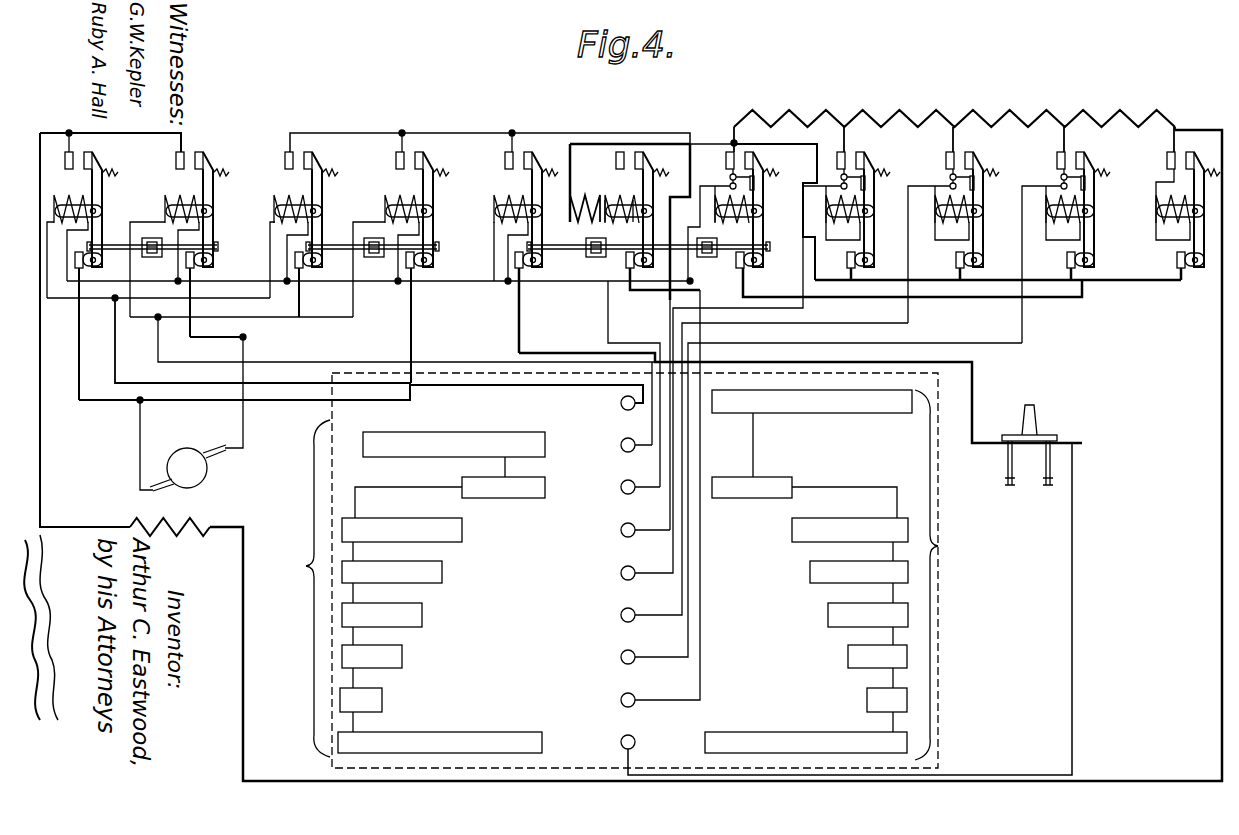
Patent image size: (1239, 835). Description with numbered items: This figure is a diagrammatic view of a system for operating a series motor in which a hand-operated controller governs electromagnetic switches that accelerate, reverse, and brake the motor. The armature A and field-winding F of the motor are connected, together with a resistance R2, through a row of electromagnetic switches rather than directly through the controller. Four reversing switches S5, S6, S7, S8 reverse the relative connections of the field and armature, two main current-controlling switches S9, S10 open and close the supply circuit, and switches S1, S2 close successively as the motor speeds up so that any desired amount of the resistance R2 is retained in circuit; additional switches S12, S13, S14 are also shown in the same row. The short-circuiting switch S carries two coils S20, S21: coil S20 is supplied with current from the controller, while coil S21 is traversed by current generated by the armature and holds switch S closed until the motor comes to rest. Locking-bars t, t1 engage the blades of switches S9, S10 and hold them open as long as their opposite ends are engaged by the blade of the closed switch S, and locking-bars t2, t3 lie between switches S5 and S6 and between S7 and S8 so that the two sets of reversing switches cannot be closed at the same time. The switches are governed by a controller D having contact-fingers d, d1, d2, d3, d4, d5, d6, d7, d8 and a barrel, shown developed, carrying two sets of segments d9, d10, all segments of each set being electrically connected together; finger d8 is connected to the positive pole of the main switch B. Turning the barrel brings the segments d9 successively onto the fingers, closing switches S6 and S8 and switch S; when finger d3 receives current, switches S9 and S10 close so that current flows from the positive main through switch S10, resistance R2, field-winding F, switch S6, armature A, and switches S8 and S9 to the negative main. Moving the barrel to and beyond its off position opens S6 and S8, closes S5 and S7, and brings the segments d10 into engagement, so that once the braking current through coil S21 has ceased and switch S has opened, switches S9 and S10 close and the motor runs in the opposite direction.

The switch S1 is at (635, 217).
The switch S2 is at (956, 229).
The reversing switch S5 is at (82, 268).
The reversing switch S6 is at (186, 205).
The reversing switch S7 is at (304, 226).
The reversing switch S8 is at (388, 203).
The main current-controlling switch S9 is at (526, 243).
The main current-controlling switch S10 is at (752, 211).
The relay switch S12 is at (853, 207).
The relay switch S13 is at (1066, 239).
The relay switch S14 is at (1188, 207).
The coil of switch S S20 is at (617, 203).
The coil of switch S S21 is at (580, 203).
The locking-bar t is at (593, 255).
The locking-bar t1 is at (715, 255).
The locking-bar t2 is at (152, 255).
The locking-bar t3 is at (372, 255).
The resistance R2 is at (954, 113).
The field-winding F is at (170, 517).
The armature A is at (191, 414).
The main switch B is at (1031, 445).
The controller D is at (644, 570).
The contact-finger d is at (621, 403).
The contact-finger d1 is at (621, 445).
The contact-finger d2 is at (621, 487).
The contact-finger d3 is at (621, 530).
The contact-finger d4 is at (621, 573).
The contact-finger d5 is at (621, 615).
The contact-finger d6 is at (621, 657).
The contact-finger d7 is at (621, 700).
The contact-finger d8 is at (621, 742).
The group of segments d9 is at (403, 588).
The group of segments d10 is at (837, 575).